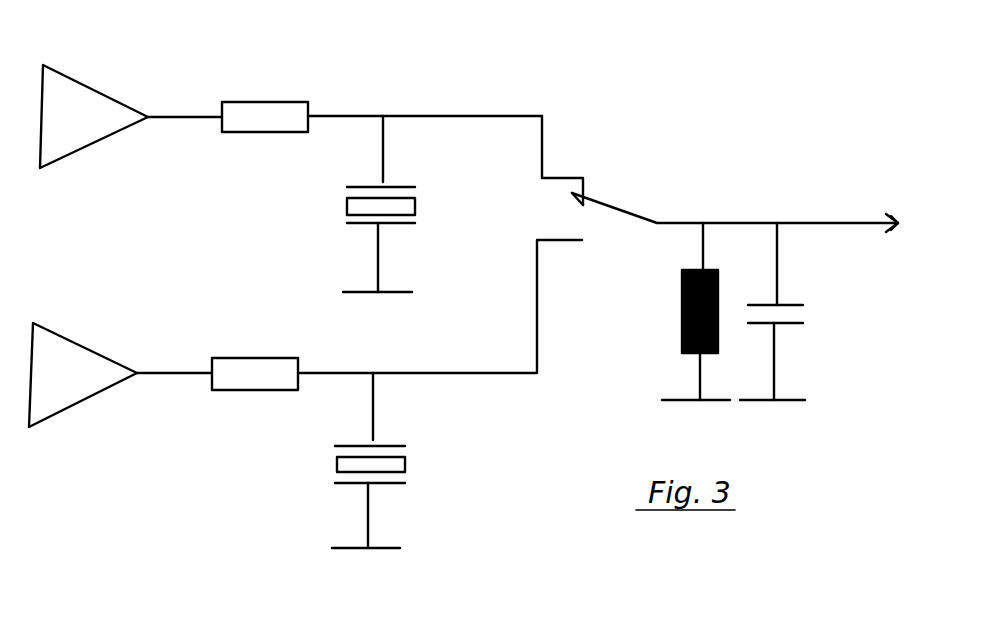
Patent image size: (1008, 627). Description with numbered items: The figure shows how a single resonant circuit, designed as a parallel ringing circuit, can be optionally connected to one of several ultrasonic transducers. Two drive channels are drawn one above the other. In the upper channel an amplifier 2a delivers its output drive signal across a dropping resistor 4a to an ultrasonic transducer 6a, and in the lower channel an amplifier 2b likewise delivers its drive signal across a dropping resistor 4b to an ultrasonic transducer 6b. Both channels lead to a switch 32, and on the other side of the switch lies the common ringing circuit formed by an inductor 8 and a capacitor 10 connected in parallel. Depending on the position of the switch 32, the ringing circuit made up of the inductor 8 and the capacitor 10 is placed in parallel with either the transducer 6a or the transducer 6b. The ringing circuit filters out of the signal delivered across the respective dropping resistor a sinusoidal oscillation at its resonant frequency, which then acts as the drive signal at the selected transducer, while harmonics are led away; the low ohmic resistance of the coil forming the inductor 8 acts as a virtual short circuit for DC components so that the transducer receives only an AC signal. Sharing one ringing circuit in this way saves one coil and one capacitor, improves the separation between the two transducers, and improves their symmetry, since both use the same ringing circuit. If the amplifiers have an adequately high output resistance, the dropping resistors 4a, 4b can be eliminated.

The amplifier 2a is at (88, 127).
The amplifier 2b is at (78, 382).
The dropping resistor 4a is at (270, 118).
The dropping resistor 4b is at (240, 378).
The ultrasonic transducer 6a is at (376, 207).
The ultrasonic transducer 6b is at (377, 463).
The switch 32 is at (590, 198).
The inductor 8 is at (682, 328).
The capacitor 10 is at (783, 313).